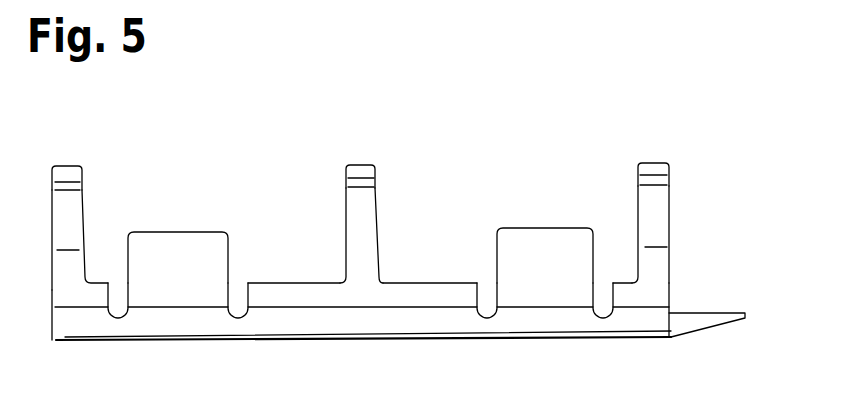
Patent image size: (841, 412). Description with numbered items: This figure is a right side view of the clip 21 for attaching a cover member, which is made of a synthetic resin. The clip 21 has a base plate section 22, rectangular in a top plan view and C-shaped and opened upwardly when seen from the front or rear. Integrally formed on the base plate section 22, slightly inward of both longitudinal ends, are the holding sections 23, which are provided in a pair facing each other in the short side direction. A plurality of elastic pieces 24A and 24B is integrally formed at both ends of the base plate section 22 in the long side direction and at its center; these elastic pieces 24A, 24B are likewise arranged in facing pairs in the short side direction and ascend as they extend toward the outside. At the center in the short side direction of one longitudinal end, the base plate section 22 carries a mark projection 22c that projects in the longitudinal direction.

The clip 21 is at (320, 340).
The base plate section 22 is at (530, 316).
The mark projection 22c is at (704, 318).
The holding section 23 is at (201, 245).
The elastic piece 24A is at (67, 167).
The elastic piece 24B is at (70, 213).